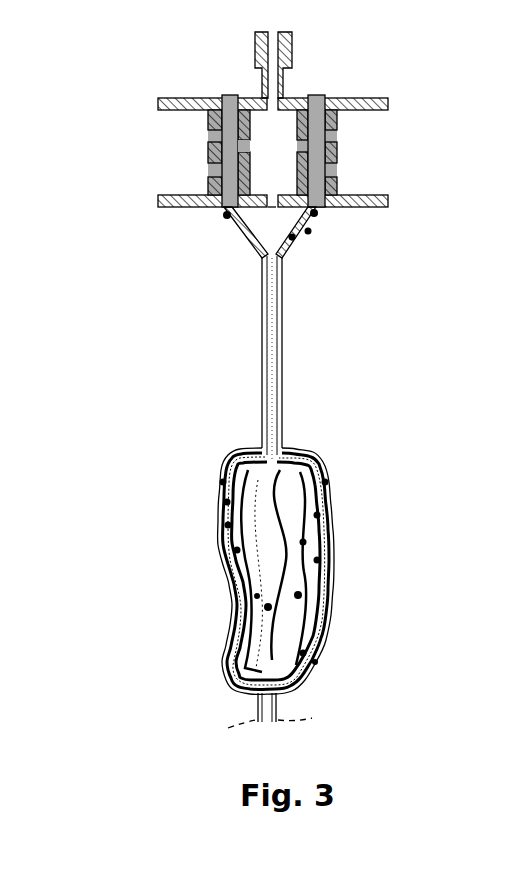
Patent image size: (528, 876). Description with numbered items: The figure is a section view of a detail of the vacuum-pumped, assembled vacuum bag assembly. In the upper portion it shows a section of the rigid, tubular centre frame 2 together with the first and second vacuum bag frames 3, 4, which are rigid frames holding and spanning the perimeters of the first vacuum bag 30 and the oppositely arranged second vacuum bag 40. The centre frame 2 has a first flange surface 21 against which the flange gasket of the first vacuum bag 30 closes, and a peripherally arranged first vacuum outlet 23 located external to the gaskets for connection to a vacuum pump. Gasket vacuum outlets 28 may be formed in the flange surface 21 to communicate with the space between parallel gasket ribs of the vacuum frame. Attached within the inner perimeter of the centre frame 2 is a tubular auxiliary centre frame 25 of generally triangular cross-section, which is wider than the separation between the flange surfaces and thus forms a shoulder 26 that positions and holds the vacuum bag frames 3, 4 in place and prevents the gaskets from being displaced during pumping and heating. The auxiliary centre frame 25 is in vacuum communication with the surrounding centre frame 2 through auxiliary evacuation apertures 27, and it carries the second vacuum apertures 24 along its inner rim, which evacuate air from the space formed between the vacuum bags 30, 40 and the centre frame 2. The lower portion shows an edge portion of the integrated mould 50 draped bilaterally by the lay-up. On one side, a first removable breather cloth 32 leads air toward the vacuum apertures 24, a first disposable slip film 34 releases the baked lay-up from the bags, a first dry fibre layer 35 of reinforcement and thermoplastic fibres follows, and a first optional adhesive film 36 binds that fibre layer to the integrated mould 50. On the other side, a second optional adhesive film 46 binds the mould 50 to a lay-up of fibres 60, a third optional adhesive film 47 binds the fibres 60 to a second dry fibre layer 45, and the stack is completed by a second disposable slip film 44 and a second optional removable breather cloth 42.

The tubular centre frame 2 is at (293, 97).
The first vacuum bag frame 3 is at (158, 98).
The second vacuum bag frame 4 is at (388, 98).
The first flange surface 21 is at (237, 122).
The first vacuum outlet 23 is at (277, 32).
The second vacuum apertures 24 is at (285, 242).
The auxiliary centre frame 25 is at (292, 236).
The shoulder 26 is at (227, 217).
The auxiliary evacuation apertures 27 is at (308, 232).
The gasket vacuum outlets 28 is at (243, 145).
The first vacuum bag 30 is at (223, 482).
The first breather cloth 32 is at (227, 502).
The first slip film 34 is at (228, 525).
The first dry fibre layer 35 is at (237, 550).
The first adhesive film 36 is at (257, 596).
The second vacuum bag 40 is at (325, 482).
The second breather cloth 42 is at (317, 515).
The second slip film 44 is at (317, 560).
The second dry fibre layer 45 is at (303, 542).
The second adhesive film 46 is at (303, 653).
The third adhesive film 47 is at (315, 662).
The integrated mould 50 is at (268, 607).
The lay-up of fibres 60 is at (298, 595).